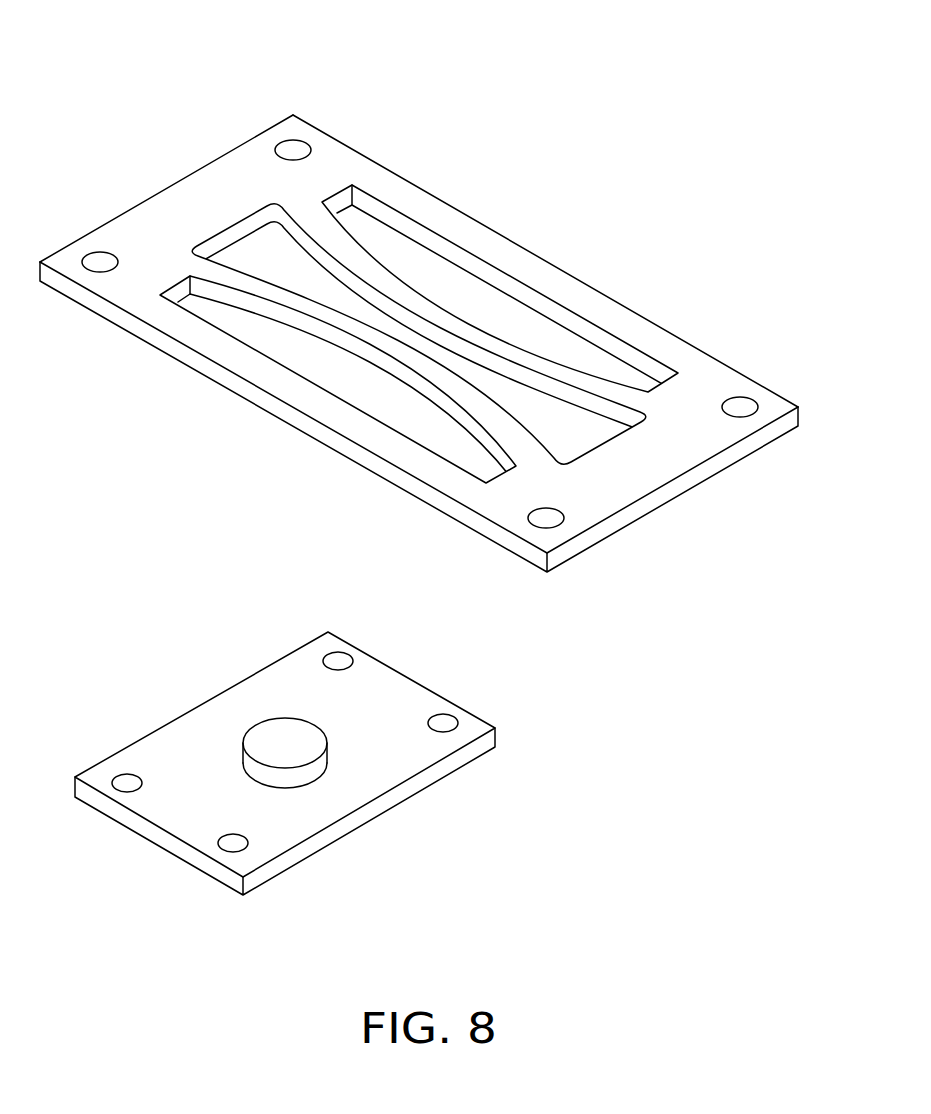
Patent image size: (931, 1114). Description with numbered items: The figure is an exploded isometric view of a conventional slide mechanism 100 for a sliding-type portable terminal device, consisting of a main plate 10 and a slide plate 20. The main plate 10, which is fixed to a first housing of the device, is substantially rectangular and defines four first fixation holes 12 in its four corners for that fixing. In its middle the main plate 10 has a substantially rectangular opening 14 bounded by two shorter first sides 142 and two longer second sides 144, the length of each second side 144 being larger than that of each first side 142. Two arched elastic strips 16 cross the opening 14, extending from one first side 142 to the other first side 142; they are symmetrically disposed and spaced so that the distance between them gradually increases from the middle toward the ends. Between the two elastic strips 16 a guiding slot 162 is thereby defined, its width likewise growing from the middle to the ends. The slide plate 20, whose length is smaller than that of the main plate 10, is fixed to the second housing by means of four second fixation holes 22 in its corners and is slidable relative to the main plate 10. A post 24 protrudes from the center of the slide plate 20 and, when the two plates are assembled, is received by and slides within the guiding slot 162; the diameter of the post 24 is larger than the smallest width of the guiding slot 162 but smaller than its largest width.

The slide mechanism 100 is at (188, 60).
The main plate 10 is at (667, 310).
The first fixation holes 12 is at (100, 263).
The opening 14 is at (433, 428).
The first side 142 is at (182, 203).
The second side 144 is at (517, 263).
The elastic strips 16 is at (355, 257).
The guiding slot 162 is at (593, 433).
The slide plate 20 is at (410, 692).
The second fixation holes 22 is at (127, 783).
The post 24 is at (272, 743).